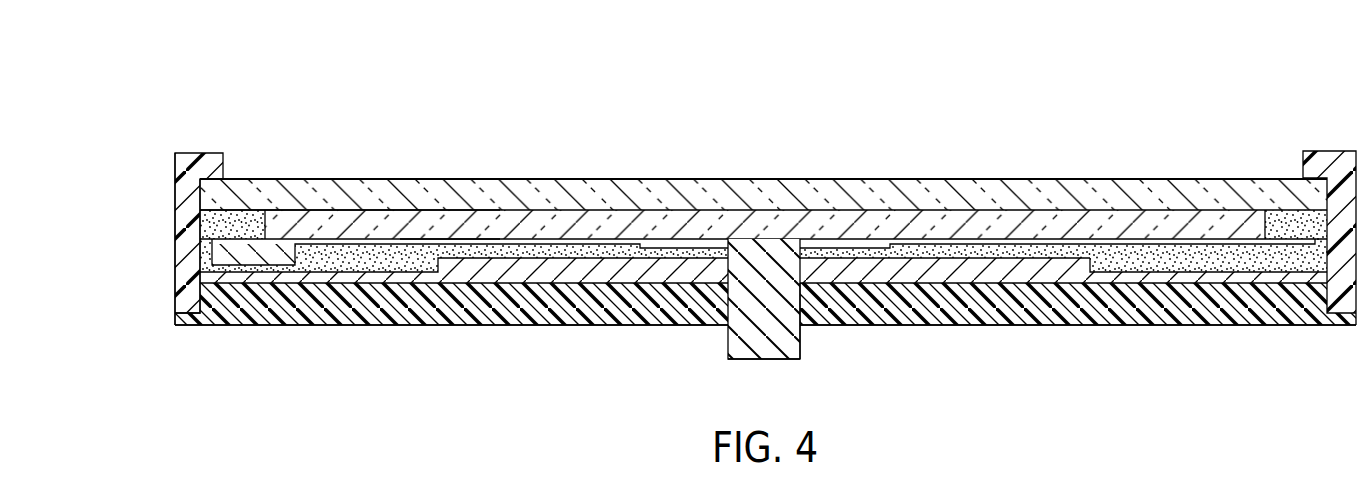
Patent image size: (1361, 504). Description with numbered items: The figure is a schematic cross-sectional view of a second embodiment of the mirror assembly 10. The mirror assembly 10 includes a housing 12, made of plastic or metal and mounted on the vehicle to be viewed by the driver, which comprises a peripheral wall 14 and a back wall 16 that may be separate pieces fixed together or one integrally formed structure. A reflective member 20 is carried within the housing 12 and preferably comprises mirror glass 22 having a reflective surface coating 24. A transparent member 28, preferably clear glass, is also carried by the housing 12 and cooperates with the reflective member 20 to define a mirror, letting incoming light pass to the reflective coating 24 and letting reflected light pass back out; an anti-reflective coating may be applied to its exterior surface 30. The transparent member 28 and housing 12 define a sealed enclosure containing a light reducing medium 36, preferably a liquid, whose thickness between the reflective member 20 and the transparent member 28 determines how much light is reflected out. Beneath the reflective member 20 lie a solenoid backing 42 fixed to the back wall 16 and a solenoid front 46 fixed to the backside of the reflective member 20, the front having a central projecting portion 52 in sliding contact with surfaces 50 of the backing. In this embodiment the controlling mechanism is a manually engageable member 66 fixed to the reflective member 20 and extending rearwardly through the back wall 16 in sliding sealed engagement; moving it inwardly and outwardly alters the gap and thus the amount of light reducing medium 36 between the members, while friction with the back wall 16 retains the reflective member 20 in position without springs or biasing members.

The mirror assembly 10 is at (237, 103).
The housing 12 is at (174, 204).
The peripheral wall 14 is at (176, 289).
The back wall 16 is at (455, 306).
The reflective member 20 is at (387, 223).
The mirror glass 22 is at (443, 225).
The reflective surface coating 24 is at (550, 215).
The transparent member 28 is at (311, 192).
The exterior surface 30 is at (827, 178).
The light reducing medium 36 is at (1249, 253).
The solenoid backing 42 is at (947, 266).
The solenoid front 46 is at (577, 240).
The surfaces 50 is at (735, 306).
The central projecting portion 52 is at (788, 337).
The manually engageable member 66 is at (770, 350).